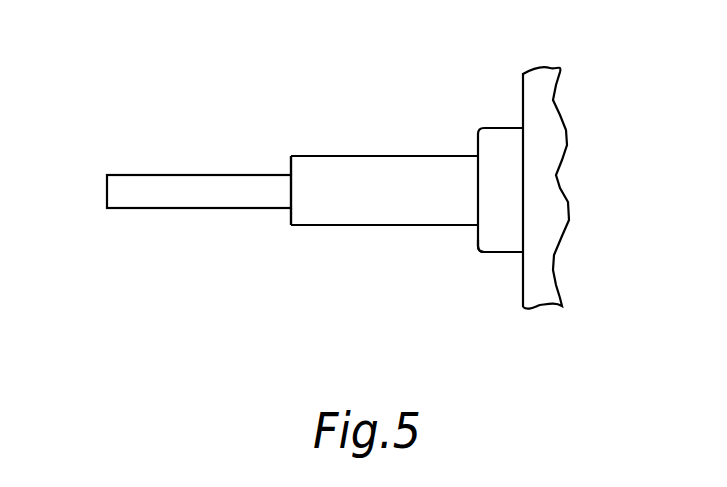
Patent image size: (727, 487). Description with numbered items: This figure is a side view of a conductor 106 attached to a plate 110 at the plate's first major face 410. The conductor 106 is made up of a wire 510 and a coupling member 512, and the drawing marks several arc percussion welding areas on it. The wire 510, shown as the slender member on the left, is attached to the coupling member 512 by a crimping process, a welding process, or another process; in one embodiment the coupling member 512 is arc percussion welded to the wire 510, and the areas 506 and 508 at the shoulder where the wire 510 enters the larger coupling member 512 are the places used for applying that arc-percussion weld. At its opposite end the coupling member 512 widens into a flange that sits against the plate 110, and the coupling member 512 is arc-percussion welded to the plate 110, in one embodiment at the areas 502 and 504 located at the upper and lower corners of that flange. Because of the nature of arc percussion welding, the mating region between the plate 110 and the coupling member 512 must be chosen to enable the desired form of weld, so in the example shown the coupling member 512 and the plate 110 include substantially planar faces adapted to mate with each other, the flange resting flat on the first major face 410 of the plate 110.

The conductor 106 is at (178, 63).
The plate 110 is at (560, 198).
The first major face 410 is at (523, 284).
The arc percussion welding area 502 is at (479, 128).
The arc percussion welding area 504 is at (478, 251).
The arc percussion welding area 506 is at (291, 157).
The arc percussion welding area 508 is at (291, 226).
The wire 510 is at (165, 200).
The coupling member 512 is at (357, 225).